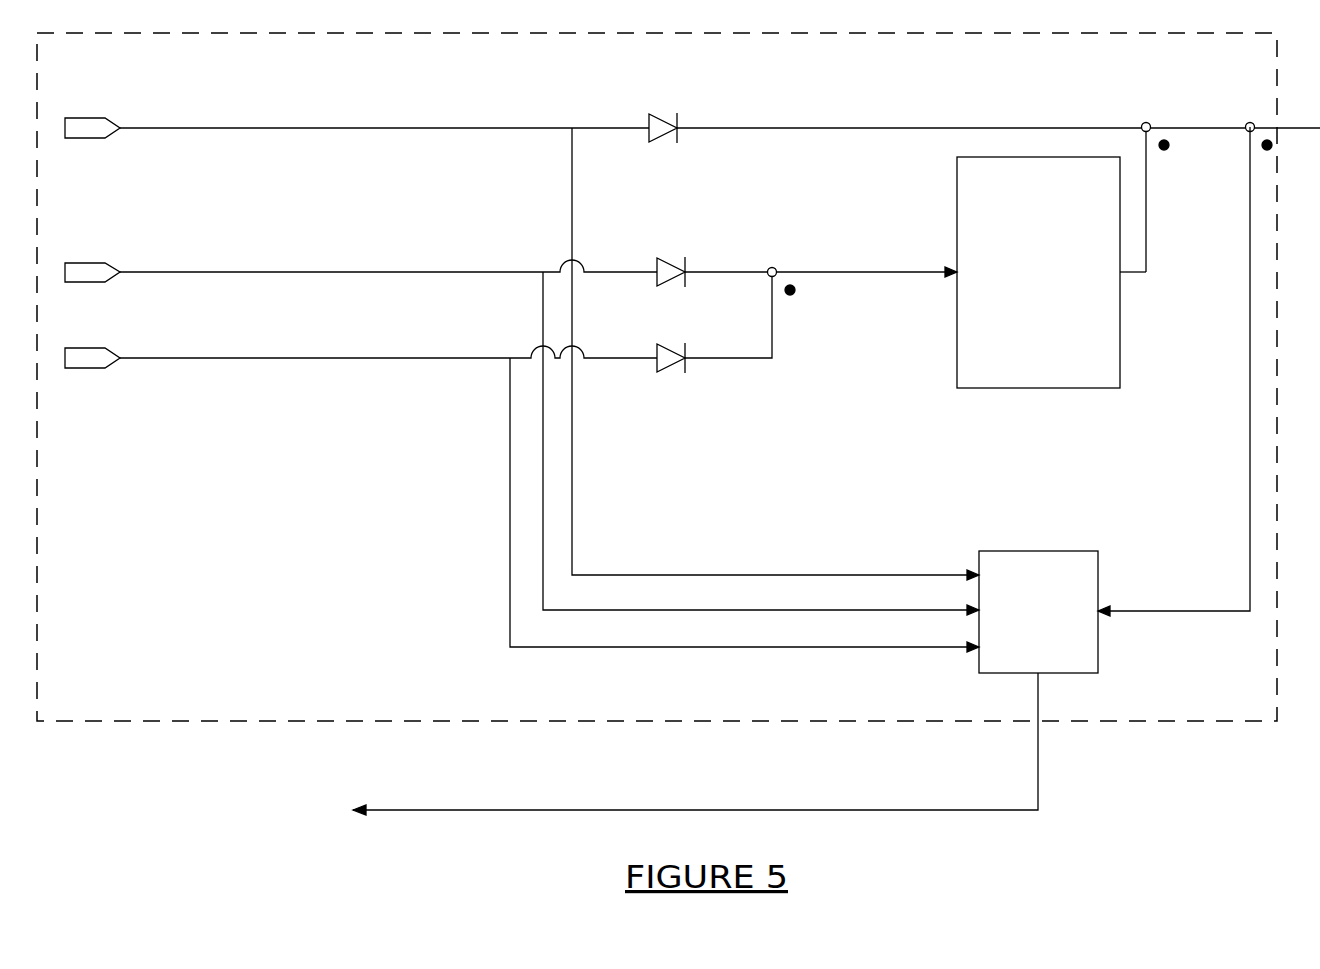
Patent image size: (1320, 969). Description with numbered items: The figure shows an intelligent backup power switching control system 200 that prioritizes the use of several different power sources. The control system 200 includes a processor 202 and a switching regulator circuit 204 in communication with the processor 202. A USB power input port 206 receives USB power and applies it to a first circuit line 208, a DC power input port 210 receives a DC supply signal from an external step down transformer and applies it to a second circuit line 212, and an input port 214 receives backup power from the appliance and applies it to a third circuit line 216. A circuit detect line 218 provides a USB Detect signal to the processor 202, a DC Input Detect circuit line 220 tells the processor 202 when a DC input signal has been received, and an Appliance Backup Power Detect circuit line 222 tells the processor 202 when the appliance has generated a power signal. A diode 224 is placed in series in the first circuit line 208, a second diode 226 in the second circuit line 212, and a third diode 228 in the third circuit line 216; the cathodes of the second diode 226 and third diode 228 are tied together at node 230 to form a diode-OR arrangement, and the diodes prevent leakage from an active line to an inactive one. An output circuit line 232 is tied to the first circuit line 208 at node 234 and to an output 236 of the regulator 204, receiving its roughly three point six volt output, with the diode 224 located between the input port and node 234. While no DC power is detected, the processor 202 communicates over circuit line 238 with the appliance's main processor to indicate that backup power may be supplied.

The intelligent backup power switching control system 200 is at (657, 377).
The processor 202 is at (1114, 400).
The switching regulator circuit 204 is at (1038, 272).
The USB power input port 206 is at (151, 97).
The first circuit line 208 is at (384, 105).
The DC power input port 210 is at (134, 232).
The second circuit line 212 is at (415, 232).
The input port 214 is at (125, 377).
The third circuit line 216 is at (419, 395).
The circuit detect line 218 is at (775, 354).
The DC Input Detect circuit line 220 is at (761, 443).
The Appliance Backup Power Detect circuit line 222 is at (744, 521).
The diode 224 is at (984, 146).
The second diode 226 is at (714, 295).
The third diode 228 is at (714, 344).
The node 230 is at (863, 251).
The output circuit line 232 is at (1184, 199).
The node 234 is at (1143, 141).
The output 236 is at (1170, 293).
The circuit line 238 is at (695, 744).